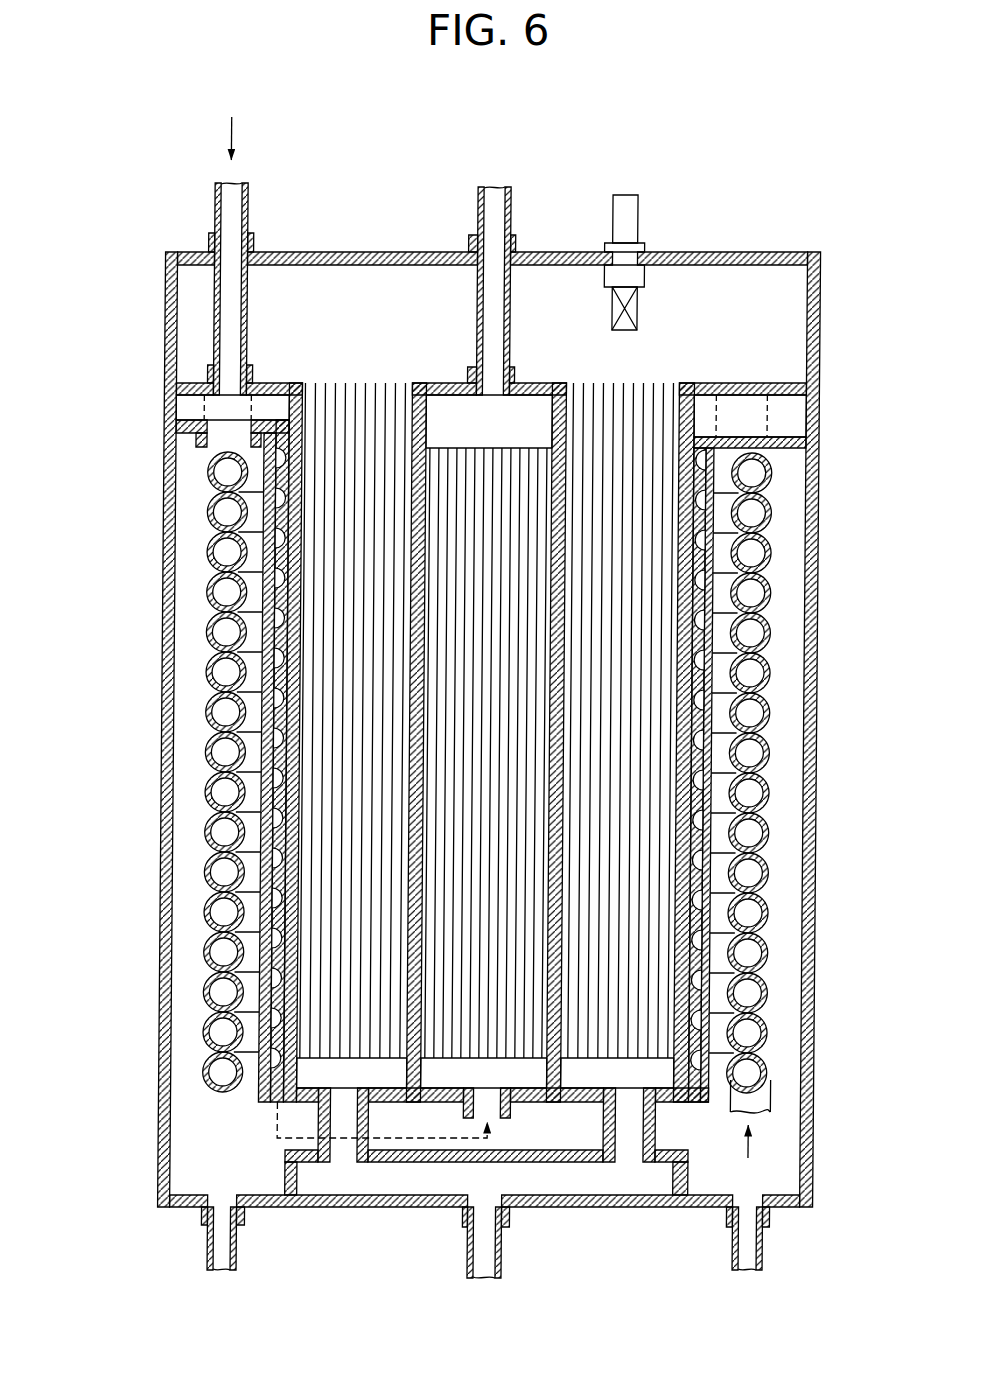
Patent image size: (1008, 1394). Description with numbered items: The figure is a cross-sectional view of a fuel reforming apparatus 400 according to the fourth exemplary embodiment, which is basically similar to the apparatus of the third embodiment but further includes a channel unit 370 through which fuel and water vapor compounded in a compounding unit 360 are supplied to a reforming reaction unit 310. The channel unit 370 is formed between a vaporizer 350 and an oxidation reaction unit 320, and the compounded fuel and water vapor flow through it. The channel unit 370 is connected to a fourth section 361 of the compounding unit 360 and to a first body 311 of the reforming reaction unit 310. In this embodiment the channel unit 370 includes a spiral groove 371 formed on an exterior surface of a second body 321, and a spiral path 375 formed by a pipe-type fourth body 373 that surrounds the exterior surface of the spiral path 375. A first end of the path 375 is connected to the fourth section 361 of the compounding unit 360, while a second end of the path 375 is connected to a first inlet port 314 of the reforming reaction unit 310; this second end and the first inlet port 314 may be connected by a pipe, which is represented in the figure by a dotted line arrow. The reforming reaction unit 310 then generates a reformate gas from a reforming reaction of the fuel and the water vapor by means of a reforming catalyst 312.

The reforming reaction unit 310 is at (575, 782).
The first body 311 is at (567, 858).
The reforming catalyst 312 is at (547, 762).
The first inlet port 314 is at (517, 1118).
The oxidation reaction unit 320 is at (292, 573).
The second body 321 is at (282, 533).
The vaporizer 350 is at (155, 740).
The compounding unit 360 is at (156, 403).
The fourth section 361 is at (191, 413).
The channel unit 370 is at (259, 683).
The spiral groove 371 is at (282, 643).
The fourth body 373 is at (714, 908).
The spiral path 375 is at (703, 988).
The fuel reforming apparatus 400 is at (517, 153).